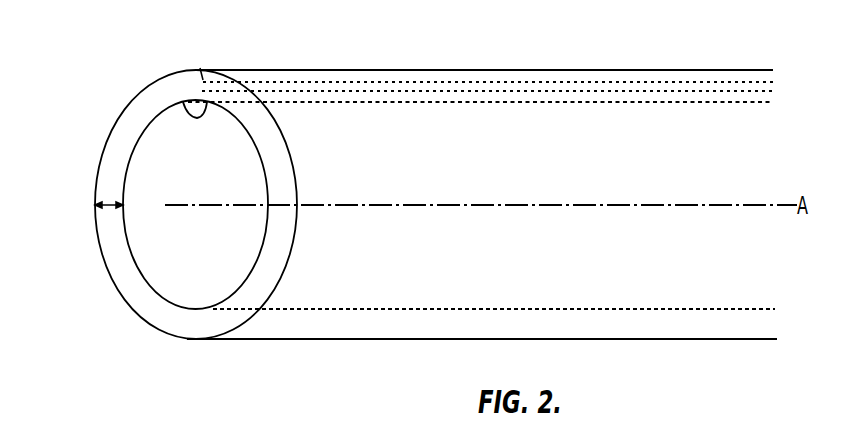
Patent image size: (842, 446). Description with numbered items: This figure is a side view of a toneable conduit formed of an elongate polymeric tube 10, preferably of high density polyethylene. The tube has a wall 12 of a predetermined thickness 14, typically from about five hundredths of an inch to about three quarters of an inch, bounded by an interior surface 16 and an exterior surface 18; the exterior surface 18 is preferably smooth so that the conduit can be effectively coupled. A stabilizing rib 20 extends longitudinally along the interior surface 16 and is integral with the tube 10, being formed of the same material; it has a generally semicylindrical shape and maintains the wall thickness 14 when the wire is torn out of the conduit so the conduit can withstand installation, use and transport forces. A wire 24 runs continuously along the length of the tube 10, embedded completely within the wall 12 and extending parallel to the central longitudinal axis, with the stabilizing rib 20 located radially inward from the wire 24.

The elongate polymeric tube 10 is at (682, 340).
The wall 12 is at (248, 296).
The predetermined thickness 14 is at (110, 209).
The interior surface 16 is at (152, 272).
The exterior surface 18 is at (150, 326).
The stabilizing rib 20 is at (183, 103).
The wire 24 is at (200, 68).